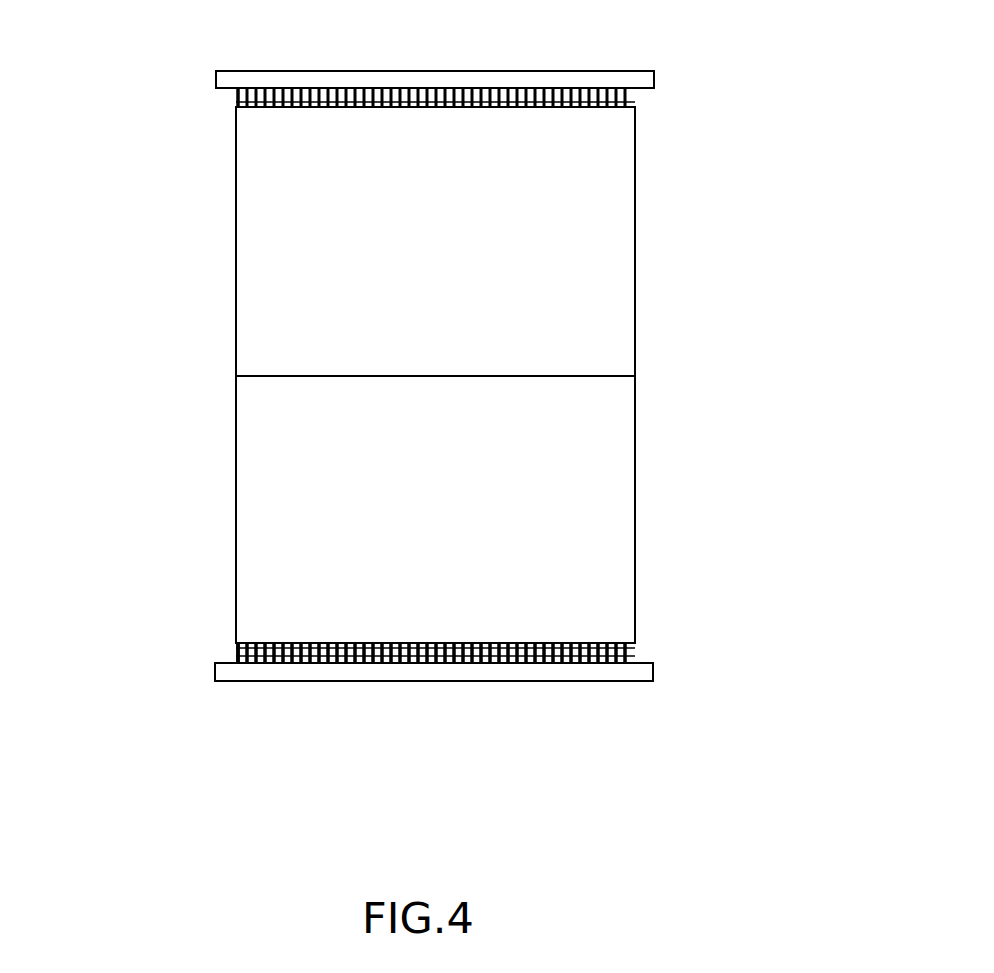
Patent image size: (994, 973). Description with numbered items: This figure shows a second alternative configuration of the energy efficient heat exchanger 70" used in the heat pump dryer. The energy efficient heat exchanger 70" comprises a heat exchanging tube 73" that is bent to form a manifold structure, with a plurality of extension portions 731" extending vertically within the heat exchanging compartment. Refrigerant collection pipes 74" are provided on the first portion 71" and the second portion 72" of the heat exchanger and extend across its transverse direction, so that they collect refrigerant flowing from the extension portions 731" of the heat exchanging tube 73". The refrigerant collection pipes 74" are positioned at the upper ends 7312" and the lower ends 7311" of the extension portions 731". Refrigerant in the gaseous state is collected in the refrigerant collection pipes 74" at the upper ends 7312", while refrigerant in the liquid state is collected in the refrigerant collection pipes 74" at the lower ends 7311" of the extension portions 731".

The energy efficient heat exchanger 70 is at (195, 324).
The first portion 71 is at (592, 486).
The second portion 72 is at (592, 262).
The heat exchanging tube 73 is at (633, 661).
The extension portions 731 is at (645, 97).
The lower ends 7311 is at (226, 657).
The upper ends 7312 is at (232, 108).
The refrigerant collection pipes 74 is at (583, 83).